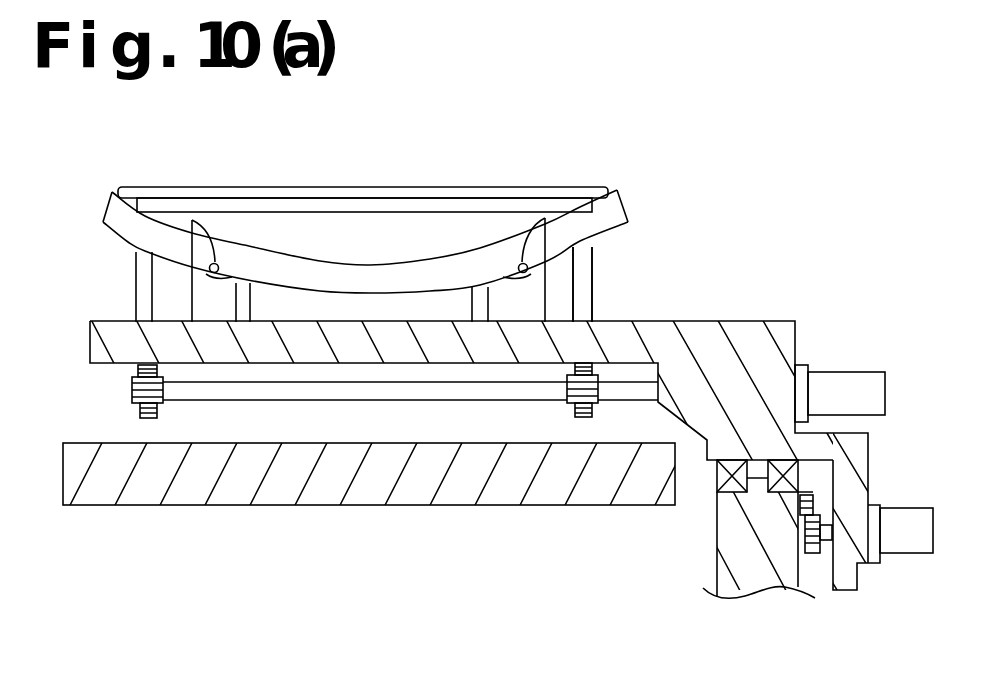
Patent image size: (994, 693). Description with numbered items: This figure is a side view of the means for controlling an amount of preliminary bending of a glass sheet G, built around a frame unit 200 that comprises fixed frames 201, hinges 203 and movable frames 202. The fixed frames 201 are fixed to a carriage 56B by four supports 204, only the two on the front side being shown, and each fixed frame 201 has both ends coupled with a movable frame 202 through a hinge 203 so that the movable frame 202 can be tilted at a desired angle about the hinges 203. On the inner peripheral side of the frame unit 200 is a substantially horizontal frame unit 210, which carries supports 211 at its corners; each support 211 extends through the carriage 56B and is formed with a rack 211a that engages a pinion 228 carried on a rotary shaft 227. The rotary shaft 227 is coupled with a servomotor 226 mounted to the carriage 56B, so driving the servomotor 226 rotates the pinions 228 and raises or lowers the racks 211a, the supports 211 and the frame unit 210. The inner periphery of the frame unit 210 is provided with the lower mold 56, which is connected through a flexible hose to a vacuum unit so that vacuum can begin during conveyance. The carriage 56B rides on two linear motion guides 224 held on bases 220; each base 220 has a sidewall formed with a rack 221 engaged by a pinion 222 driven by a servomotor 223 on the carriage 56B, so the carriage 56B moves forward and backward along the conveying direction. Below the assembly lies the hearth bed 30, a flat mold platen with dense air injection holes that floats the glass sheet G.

The glass sheet G is at (247, 192).
The frame unit 200 is at (613, 184).
The fixed frame 201 is at (403, 273).
The movable frame 202 is at (620, 211).
The hinge 203 is at (519, 273).
The support 204 is at (480, 290).
The frame unit 210 is at (278, 204).
The support 211 is at (594, 290).
The rack 211a is at (583, 418).
The lower mold 56 is at (283, 293).
The carriage 56B is at (755, 320).
The hearth bed 30 is at (367, 483).
The base 220 is at (757, 580).
The rack 221 is at (833, 503).
The pinion 222 is at (810, 553).
The servomotor 223 is at (910, 553).
The linear motion guide 224 is at (790, 478).
The servomotor 226 is at (840, 372).
The rotary shaft 227 is at (483, 388).
The pinion 228 is at (573, 407).